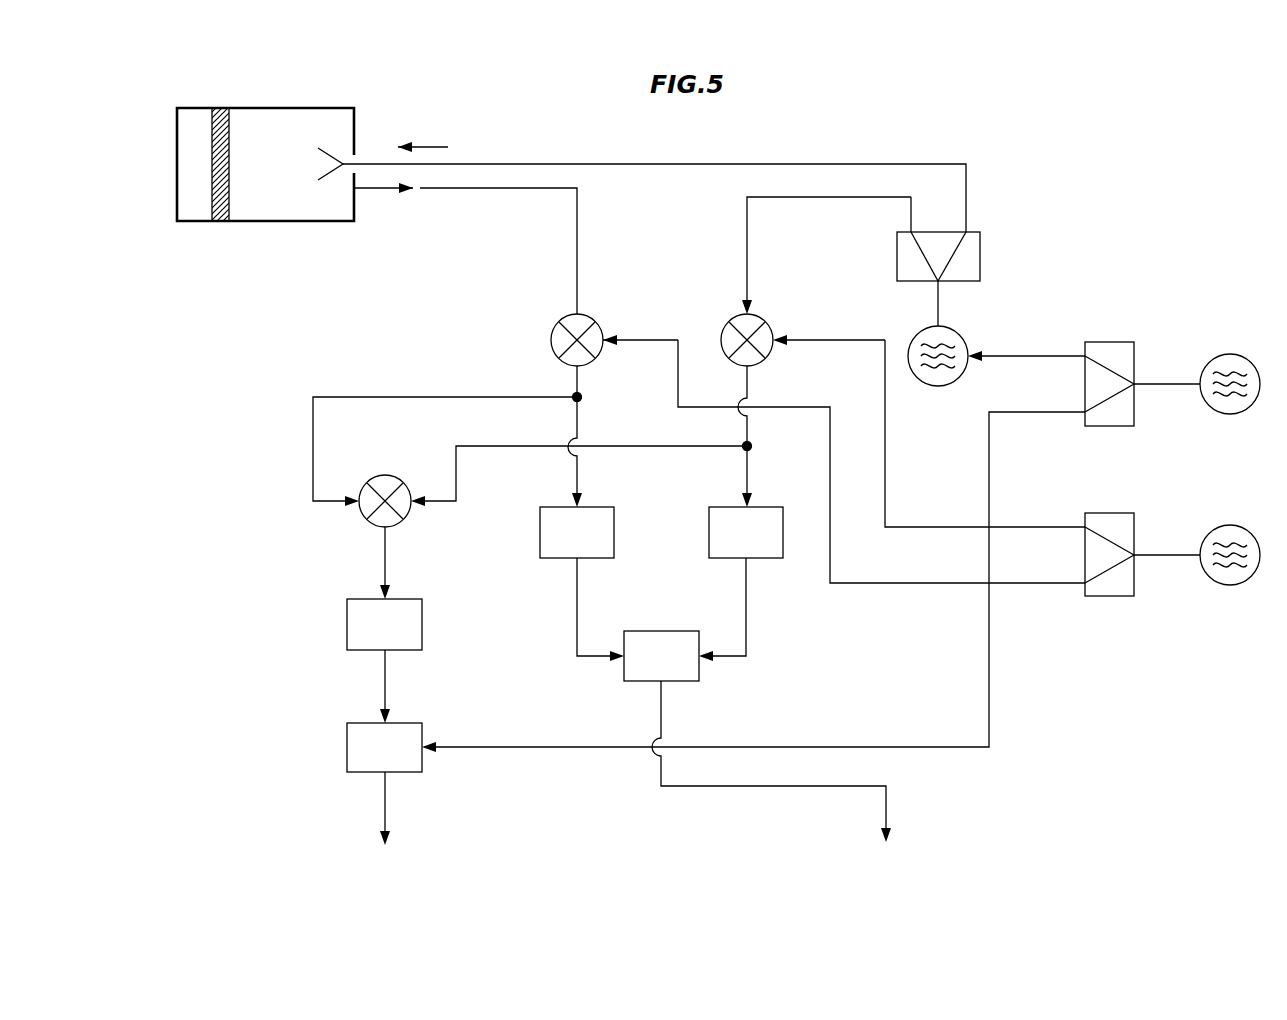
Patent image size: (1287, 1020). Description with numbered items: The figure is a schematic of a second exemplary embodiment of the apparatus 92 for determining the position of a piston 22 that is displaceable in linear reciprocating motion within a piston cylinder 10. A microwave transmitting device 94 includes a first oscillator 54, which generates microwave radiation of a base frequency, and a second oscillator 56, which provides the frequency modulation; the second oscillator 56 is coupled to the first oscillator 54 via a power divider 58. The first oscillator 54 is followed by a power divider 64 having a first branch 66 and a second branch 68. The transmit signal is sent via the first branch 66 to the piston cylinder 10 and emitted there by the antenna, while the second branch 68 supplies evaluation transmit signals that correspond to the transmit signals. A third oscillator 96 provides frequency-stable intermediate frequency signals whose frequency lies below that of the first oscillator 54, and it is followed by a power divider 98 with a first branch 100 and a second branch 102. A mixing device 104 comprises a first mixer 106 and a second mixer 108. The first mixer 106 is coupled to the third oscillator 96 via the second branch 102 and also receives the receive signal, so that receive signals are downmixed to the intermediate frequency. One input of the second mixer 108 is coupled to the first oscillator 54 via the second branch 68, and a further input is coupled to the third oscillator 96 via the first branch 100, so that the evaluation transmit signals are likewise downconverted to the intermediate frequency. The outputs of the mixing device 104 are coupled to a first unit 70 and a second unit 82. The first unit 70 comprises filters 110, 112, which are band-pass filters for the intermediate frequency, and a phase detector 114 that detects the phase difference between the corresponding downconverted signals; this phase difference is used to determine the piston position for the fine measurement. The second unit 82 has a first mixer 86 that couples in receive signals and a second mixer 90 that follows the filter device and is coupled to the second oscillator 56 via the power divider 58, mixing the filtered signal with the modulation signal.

The piston cylinder 10 is at (308, 98).
The piston 22 is at (220, 108).
The first oscillator 54 is at (938, 386).
The second oscillator 56 is at (1230, 358).
The power divider 58 is at (1117, 350).
The power divider 64 is at (951, 267).
The first branch 66 is at (952, 264).
The second branch 68 is at (920, 258).
The first unit 70 is at (776, 627).
The second unit 82 is at (316, 629).
The first mixer 86 is at (370, 503).
The second mixer 90 is at (365, 762).
The apparatus 92 is at (1000, 145).
The microwave transmitting device 94 is at (1068, 318).
The third oscillator 96 is at (1232, 585).
The power divider 98 is at (1144, 553).
The first branch 100 is at (1105, 530).
The second branch 102 is at (1100, 575).
The mixing device 104 is at (777, 296).
The first mixer 106 is at (562, 348).
The second mixer 108 is at (732, 348).
The filter 110 is at (553, 532).
The filter 112 is at (722, 532).
The phase detector 114 is at (648, 686).